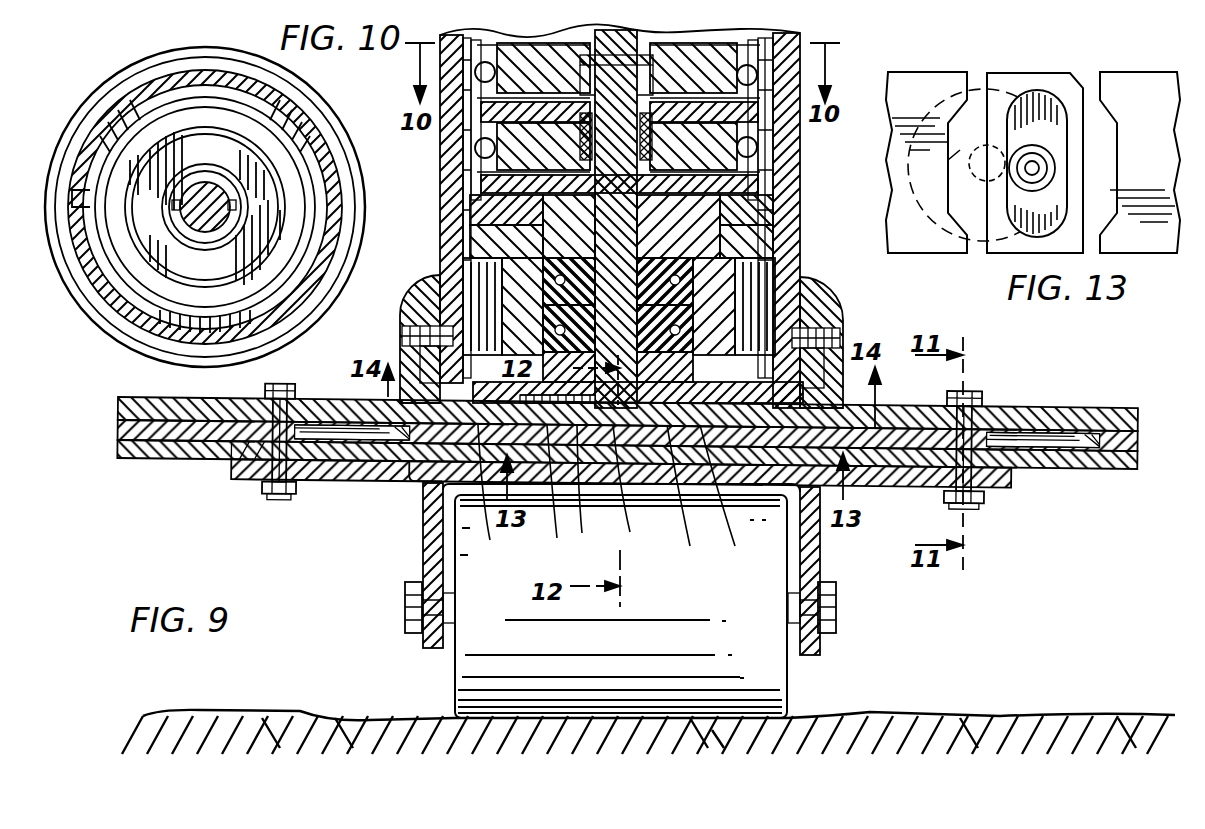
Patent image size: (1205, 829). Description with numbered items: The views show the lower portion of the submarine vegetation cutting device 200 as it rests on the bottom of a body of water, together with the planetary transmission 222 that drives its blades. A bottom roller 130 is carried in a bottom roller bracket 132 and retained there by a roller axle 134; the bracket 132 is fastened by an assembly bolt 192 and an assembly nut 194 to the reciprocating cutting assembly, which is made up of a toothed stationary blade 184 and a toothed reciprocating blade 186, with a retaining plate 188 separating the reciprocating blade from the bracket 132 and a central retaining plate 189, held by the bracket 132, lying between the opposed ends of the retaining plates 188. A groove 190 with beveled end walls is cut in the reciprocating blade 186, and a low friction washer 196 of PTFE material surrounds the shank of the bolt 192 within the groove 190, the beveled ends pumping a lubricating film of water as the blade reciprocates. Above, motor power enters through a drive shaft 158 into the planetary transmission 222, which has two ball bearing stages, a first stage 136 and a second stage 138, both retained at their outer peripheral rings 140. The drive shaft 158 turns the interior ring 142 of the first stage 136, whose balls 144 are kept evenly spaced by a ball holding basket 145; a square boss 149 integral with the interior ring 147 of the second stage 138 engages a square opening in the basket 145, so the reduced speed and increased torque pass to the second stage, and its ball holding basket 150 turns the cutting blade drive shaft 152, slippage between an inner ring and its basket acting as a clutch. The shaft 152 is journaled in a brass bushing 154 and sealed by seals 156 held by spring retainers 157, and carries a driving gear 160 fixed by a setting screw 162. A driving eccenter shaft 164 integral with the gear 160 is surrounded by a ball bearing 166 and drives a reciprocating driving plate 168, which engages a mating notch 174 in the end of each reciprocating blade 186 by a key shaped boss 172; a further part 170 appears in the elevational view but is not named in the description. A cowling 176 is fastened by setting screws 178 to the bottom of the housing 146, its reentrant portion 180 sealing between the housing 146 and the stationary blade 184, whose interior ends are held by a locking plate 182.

In FIG. 9, the bottom roller 130 is at (621, 606).
In FIG. 9, the bottom roller bracket 132 is at (423, 553).
In FIG. 9, the roller axle 134 is at (837, 608).
In FIG. 10, the first stage ball bearing 136 is at (102, 84).
In FIG. 9, the first stage ball bearing 136 is at (780, 130).
In FIG. 9, the second stage ball bearing 138 is at (756, 178).
In FIG. 10, the outer peripheral rings 140 is at (352, 232).
In FIG. 9, the outer peripheral rings 140 is at (770, 150).
In FIG. 10, the interior ring 142 is at (230, 195).
In FIG. 9, the interior ring 142 is at (440, 45).
In FIG. 10, the balls 144 is at (130, 305).
In FIG. 9, the balls 144 is at (478, 148).
In FIG. 9, the ball holding basket 145 is at (720, 157).
In FIG. 9, the housing 146 is at (795, 232).
In FIG. 9, the interior ring 147 is at (530, 143).
In FIG. 9, the square boss 149 is at (560, 95).
In FIG. 9, the ball holding basket 150 is at (470, 185).
In FIG. 9, the cutting blade drive shaft 152 is at (600, 237).
In FIG. 13, the cutting blade drive shaft 152 is at (988, 150).
In FIG. 9, the brass bushing 154 is at (795, 258).
In FIG. 9, the seals 156 is at (563, 278).
In FIG. 9, the spring retainers 157 is at (720, 330).
In FIG. 10, the drive shaft 158 is at (205, 175).
In FIG. 9, the drive shaft 158 is at (712, 89).
In FIG. 9, the driving gear 160 is at (745, 358).
In FIG. 13, the driving gear 160 is at (1013, 82).
In FIG. 9, the setting screw 162 is at (599, 491).
In FIG. 13, the setting screw 162 is at (1037, 163).
In FIG. 9, the driving eccenter shaft 164 is at (734, 498).
In FIG. 13, the driving eccenter shaft 164 is at (1040, 168).
In FIG. 9, the ball bearing 166 is at (690, 498).
In FIG. 13, the ball bearing 166 is at (1028, 150).
In FIG. 9, the reciprocating driving plate 168 is at (641, 491).
In FIG. 13, the reciprocating driving plate 168 is at (1070, 245).
In FIG. 13, the block bottom 170 is at (1008, 262).
In FIG. 13, the key shaped boss 172 is at (1120, 167).
In FIG. 13, the mating notch 174 is at (1120, 205).
In FIG. 9, the cowling 176 is at (402, 352).
In FIG. 9, the setting screws 178 is at (405, 336).
In FIG. 9, the reentrant portion 180 is at (410, 478).
In FIG. 9, the locking plate 182 is at (507, 495).
In FIG. 9, the toothed stationary blade 184 is at (135, 397).
In FIG. 9, the toothed reciprocating blade 186 is at (118, 428).
In FIG. 13, the toothed reciprocating blade 186 is at (940, 64).
In FIG. 9, the retaining plate 188 is at (135, 458).
In FIG. 9, the central retaining plate 189 is at (559, 495).
In FIG. 9, the groove 190 is at (330, 480).
In FIG. 9, the assembly bolt 192 is at (264, 387).
In FIG. 9, the assembly nut 194 is at (268, 495).
In FIG. 9, the washer 196 is at (215, 458).
In FIG. 9, the cutting device 200 is at (840, 298).
In FIG. 9, the planetary transmission 222 is at (801, 30).